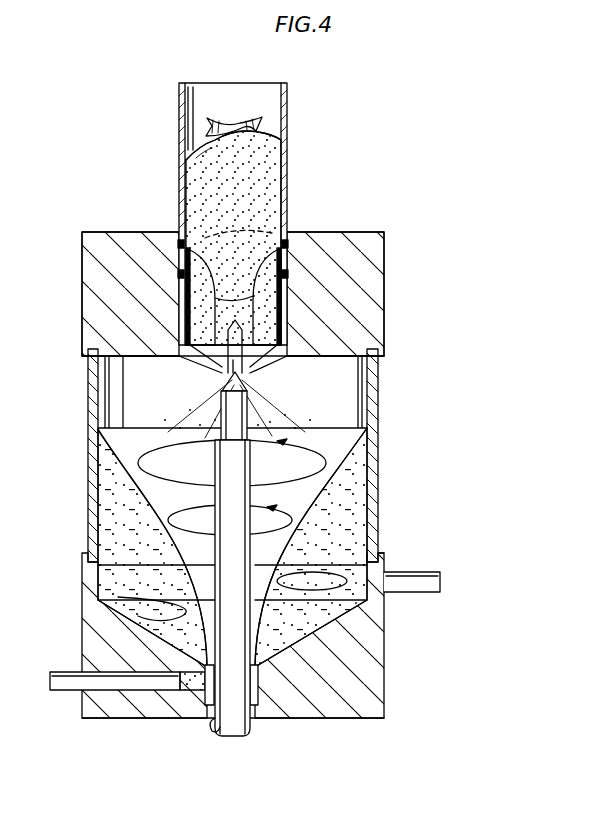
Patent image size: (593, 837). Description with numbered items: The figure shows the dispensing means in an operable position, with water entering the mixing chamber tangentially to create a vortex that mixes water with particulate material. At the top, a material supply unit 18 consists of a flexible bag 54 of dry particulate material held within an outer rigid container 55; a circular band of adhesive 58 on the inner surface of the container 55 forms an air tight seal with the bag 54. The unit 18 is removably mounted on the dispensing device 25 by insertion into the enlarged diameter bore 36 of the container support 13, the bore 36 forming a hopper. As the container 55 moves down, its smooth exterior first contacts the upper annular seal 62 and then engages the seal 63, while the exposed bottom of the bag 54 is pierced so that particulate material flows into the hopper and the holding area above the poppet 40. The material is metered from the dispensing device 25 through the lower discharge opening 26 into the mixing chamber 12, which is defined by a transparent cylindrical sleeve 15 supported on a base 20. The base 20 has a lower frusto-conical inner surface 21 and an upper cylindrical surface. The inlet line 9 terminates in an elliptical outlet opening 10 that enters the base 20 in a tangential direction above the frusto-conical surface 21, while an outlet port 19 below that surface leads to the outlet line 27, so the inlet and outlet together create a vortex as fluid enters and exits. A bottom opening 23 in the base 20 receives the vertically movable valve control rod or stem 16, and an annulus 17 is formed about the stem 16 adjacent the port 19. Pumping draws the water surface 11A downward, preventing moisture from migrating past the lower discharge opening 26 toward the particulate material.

The inlet line 9 is at (418, 595).
The elliptical outlet opening 10 is at (375, 558).
The water surface 11A is at (113, 442).
The mixing chamber 12 is at (348, 385).
The container support 13 is at (373, 264).
The transparent cylindrical sleeve 15 is at (378, 409).
The valve control rod or stem 16 is at (236, 722).
The annulus 17 is at (258, 695).
The material supply unit 18 is at (288, 166).
The outlet port 19 is at (200, 695).
The base 20 is at (371, 684).
The frusto-conical inner surface 21 is at (155, 620).
The bottom opening 23 is at (214, 725).
The dispensing device 25 is at (403, 292).
The lower discharge opening 26 is at (250, 371).
The outlet line 27 is at (60, 672).
The enlarged diameter bore 36 is at (285, 315).
The poppet 40 is at (226, 337).
The flexible bag 54 is at (256, 155).
The rigid container 55 is at (184, 168).
The circular band of adhesive 58 is at (185, 233).
The upper annular seal 62 is at (291, 242).
The seal 63 is at (291, 276).